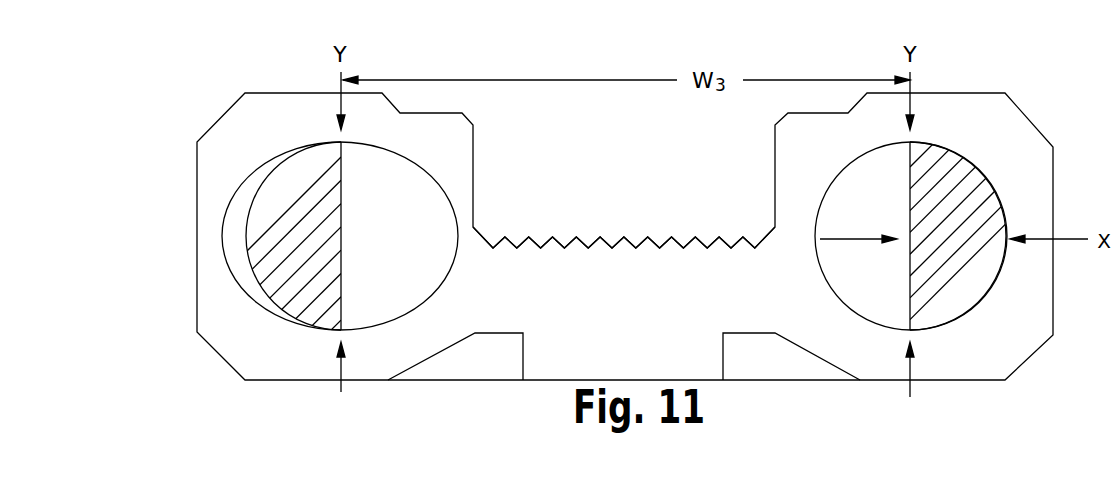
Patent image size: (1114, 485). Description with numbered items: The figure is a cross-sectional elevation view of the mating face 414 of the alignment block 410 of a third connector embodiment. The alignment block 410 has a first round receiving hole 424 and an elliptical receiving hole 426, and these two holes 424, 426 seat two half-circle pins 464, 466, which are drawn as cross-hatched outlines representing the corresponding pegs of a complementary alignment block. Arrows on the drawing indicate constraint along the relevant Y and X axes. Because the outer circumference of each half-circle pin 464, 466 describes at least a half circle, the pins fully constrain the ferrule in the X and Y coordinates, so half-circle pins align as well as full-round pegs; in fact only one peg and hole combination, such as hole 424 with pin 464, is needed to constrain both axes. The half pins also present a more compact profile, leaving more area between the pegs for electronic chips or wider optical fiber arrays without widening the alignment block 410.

The alignment block 410 is at (178, 97).
The mating face 414 is at (640, 303).
The first round receiving hole 424 is at (870, 297).
The elliptical receiving hole 426 is at (400, 298).
The half-circle pin 464 is at (1004, 221).
The half-circle pin 466 is at (248, 224).